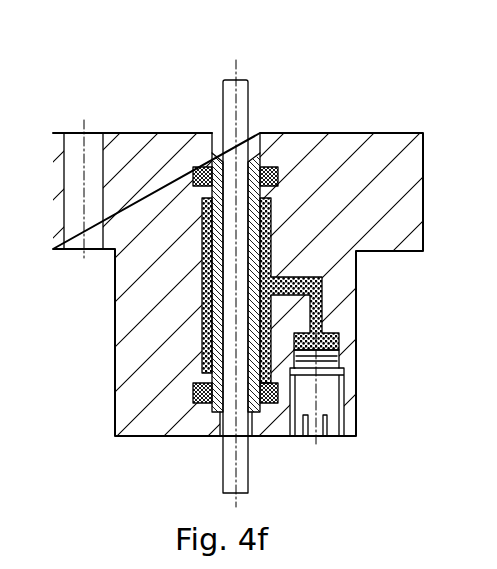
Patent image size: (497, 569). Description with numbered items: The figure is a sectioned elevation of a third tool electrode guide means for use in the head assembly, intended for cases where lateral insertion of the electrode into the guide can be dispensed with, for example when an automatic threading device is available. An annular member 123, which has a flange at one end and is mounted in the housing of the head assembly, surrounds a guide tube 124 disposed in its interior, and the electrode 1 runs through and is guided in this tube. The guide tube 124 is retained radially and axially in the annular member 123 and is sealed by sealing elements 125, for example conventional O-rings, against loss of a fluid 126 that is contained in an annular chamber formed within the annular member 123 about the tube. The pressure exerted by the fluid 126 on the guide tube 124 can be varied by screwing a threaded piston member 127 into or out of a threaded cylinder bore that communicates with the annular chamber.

The electrode 1 is at (238, 108).
The annular member 123 is at (133, 365).
The guide tube 124 is at (253, 167).
The sealing elements 125 is at (197, 170).
The fluid 126 is at (313, 303).
The threaded piston member 127 is at (323, 402).